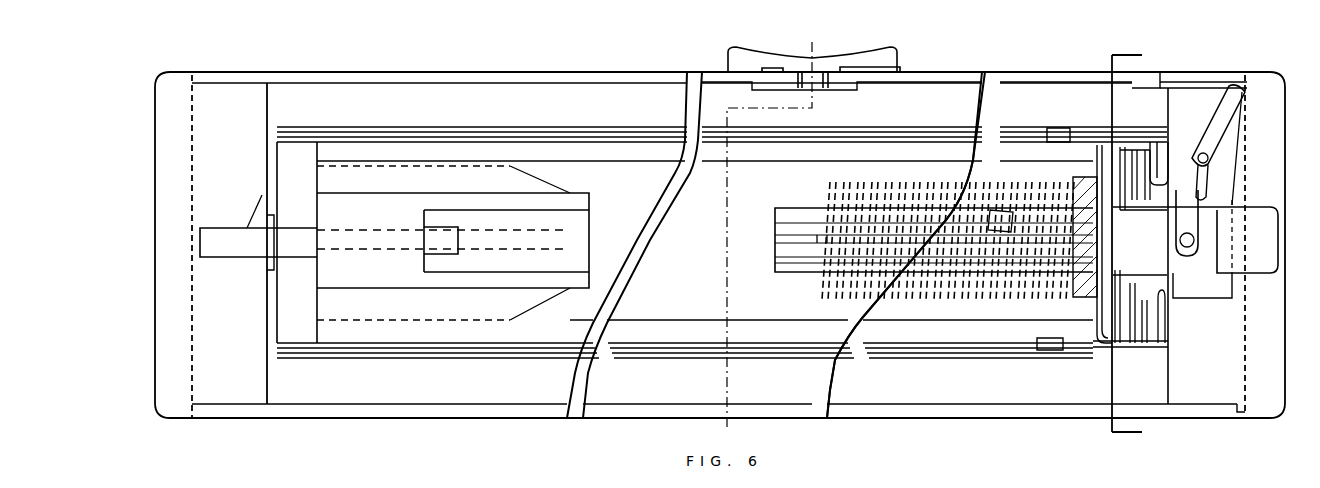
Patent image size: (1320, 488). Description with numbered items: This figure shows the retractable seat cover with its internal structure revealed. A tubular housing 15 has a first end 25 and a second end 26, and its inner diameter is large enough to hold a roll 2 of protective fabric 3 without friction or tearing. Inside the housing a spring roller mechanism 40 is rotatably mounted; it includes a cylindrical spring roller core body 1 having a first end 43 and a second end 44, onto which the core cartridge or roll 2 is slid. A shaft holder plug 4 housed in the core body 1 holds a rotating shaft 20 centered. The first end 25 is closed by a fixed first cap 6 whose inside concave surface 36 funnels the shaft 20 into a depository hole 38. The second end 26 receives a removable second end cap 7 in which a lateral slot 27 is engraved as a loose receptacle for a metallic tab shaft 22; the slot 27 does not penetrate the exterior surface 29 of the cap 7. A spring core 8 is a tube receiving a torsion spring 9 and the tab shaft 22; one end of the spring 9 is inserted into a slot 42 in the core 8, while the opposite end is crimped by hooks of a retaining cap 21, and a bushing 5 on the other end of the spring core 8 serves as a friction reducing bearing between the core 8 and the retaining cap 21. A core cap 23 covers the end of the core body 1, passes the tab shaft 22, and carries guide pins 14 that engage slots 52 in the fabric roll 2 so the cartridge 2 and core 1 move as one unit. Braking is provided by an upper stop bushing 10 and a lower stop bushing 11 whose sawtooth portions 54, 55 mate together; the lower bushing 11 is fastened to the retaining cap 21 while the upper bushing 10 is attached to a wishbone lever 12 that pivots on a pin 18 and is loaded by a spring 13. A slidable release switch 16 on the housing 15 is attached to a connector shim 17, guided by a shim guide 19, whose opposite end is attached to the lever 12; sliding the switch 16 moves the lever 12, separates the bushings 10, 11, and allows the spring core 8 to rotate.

The spring roller core body 1 is at (480, 328).
The core cartridge 2 is at (528, 346).
The protective fabric 3 is at (650, 352).
The shaft holder plug 4 is at (437, 282).
The bushing 5 is at (1070, 295).
The first cap 6 is at (232, 380).
The second end cap 7 is at (1182, 468).
The spring core 8 is at (803, 263).
The torsion spring 9 is at (905, 320).
The upper stop bushing 10 is at (1137, 333).
The lower stop bushing 11 is at (1082, 357).
The wishbone lever 12 is at (1205, 155).
The spring 13 is at (1198, 190).
The guide pins 14 is at (1050, 350).
The housing 15 is at (957, 410).
The release switch 16 is at (830, 65).
The connector shim 17 is at (920, 85).
The pin 18 is at (1210, 153).
The shim guide 19 is at (1112, 68).
The rotating shaft 20 is at (238, 250).
The retaining cap 21 is at (1095, 130).
The tab shaft 22 is at (1258, 258).
The core cap 23 is at (1172, 338).
The first end 25 is at (200, 78).
The second end 26 is at (1228, 417).
The lateral slot 27 is at (1280, 224).
The exterior surface 29 is at (1284, 376).
The inside concave surface 36 is at (270, 260).
The depository hole 38 is at (212, 236).
The spring roller mechanism 40 is at (404, 128).
The slot 42 is at (793, 233).
The first end 43 is at (333, 342).
The second end 44 is at (990, 340).
The slots 52 is at (1055, 128).
The sawtooth portion 54 is at (1128, 218).
The sawtooth portion 55 is at (1122, 278).